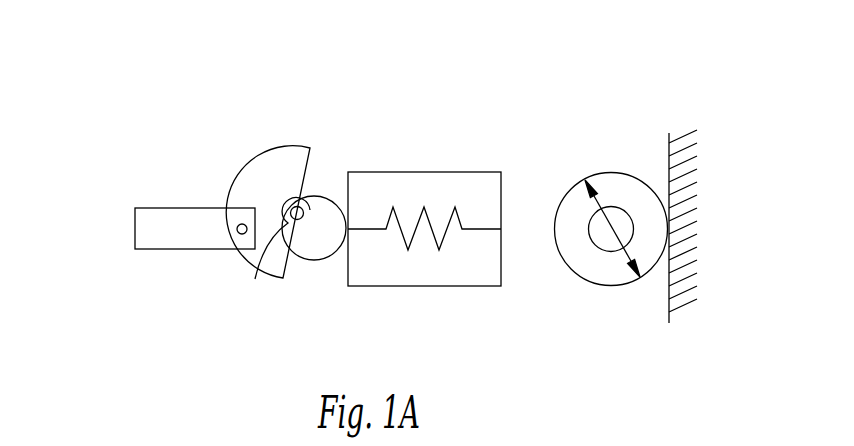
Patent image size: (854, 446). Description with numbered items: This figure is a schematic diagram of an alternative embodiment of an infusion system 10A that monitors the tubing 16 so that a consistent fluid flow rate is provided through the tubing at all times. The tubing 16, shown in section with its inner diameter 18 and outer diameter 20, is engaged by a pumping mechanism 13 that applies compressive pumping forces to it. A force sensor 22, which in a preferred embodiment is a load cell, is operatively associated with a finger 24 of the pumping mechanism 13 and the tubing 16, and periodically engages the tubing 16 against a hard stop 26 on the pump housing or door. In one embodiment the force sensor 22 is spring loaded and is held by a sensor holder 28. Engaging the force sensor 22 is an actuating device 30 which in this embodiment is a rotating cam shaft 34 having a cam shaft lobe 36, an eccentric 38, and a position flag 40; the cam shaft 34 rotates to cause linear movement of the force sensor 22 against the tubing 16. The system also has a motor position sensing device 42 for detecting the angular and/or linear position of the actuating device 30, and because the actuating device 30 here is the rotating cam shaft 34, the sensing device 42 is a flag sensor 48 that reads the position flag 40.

The infusion system 10A is at (493, 74).
The pumping mechanism 13 is at (230, 332).
The tubing 16 is at (609, 172).
The inner diameter 18 is at (600, 248).
The outer diameter 20 is at (642, 280).
The force sensor 22 is at (352, 102).
The finger 24 is at (501, 195).
The hard stop 26 is at (682, 305).
The sensor holder 28 is at (464, 286).
The actuating device 30 is at (132, 41).
The rotating cam shaft 34 is at (255, 279).
The cam shaft lobe 36 is at (310, 242).
The eccentric 38 is at (330, 262).
The position flag 40 is at (263, 158).
The motor position sensing device 42 is at (90, 113).
The flag sensor 48 is at (183, 208).